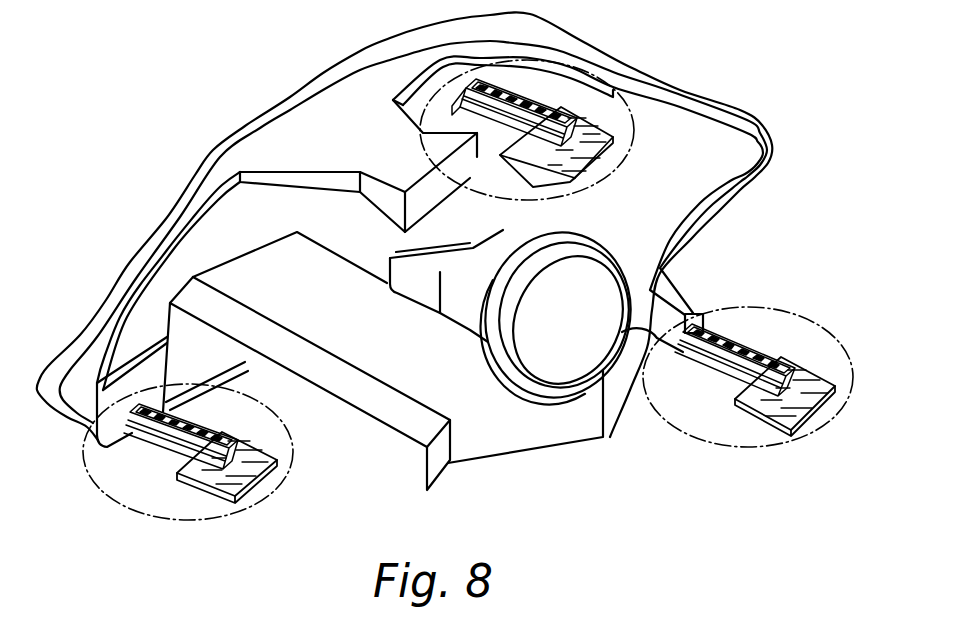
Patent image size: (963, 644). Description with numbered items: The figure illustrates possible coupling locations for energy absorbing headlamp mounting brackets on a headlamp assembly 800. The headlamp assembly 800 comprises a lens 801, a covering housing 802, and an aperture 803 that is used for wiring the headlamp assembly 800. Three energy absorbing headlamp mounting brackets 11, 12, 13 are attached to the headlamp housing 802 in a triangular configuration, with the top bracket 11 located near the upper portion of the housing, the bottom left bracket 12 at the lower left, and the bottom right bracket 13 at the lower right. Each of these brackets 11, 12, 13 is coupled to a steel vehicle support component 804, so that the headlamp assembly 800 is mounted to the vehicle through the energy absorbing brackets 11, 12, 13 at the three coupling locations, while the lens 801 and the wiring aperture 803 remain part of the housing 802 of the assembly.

The headlamp assembly 800 is at (251, 73).
The lens 801 is at (213, 155).
The covering housing 802 is at (473, 403).
The aperture 803 is at (567, 343).
The vehicle support component 804 is at (612, 148).
The energy absorbing headlamp mounting bracket 11 is at (643, 137).
The energy absorbing headlamp mounting bracket 12 is at (190, 519).
The energy absorbing headlamp mounting bracket 13 is at (747, 305).